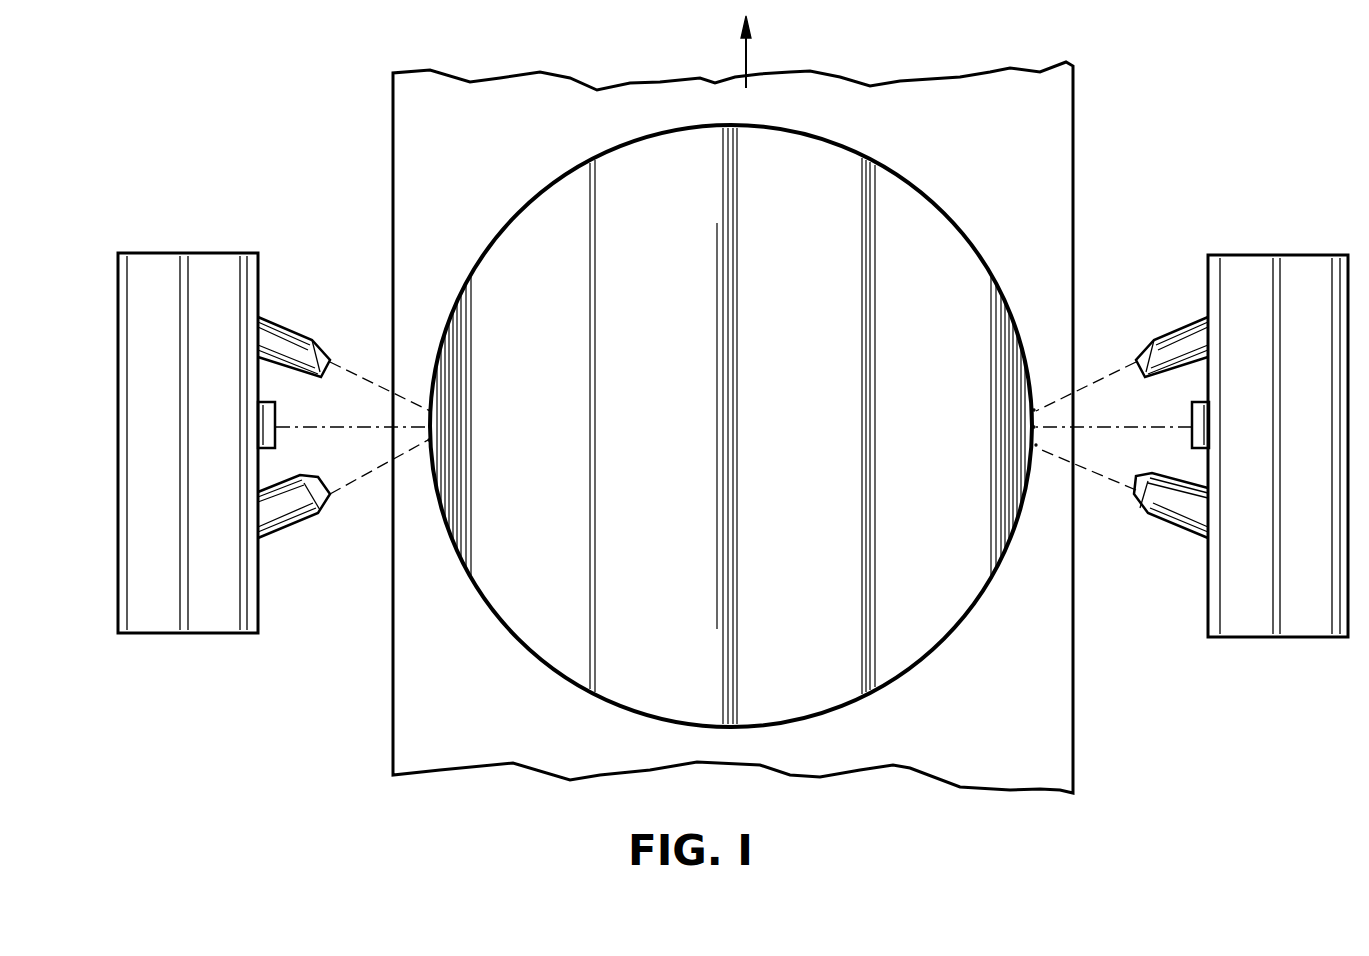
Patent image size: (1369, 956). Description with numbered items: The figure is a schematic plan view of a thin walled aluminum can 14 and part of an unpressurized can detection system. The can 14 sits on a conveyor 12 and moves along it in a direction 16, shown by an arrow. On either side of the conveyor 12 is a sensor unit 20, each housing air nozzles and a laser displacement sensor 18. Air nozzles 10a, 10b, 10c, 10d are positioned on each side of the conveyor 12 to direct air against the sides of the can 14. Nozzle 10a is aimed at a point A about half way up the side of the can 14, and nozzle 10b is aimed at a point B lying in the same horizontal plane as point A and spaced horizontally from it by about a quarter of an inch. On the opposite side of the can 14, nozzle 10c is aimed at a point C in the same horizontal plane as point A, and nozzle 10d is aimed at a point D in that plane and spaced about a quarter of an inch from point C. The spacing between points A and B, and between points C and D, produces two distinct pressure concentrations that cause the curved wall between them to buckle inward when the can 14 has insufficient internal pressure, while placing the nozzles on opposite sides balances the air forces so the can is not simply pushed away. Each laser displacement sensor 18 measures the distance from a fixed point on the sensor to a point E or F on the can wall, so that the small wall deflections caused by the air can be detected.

The air nozzle 10a is at (1148, 520).
The air nozzle 10b is at (1178, 332).
The air nozzle 10c is at (311, 521).
The air nozzle 10d is at (311, 337).
The conveyor 12 is at (1055, 143).
The thin walled aluminum can 14 is at (893, 190).
The direction 16 is at (748, 57).
The laser displacement sensor 18 is at (276, 412).
The sensor unit 20 is at (167, 262).
The point A is at (1038, 465).
The point B is at (1047, 383).
The point C is at (430, 445).
The point D is at (430, 408).
The point E is at (1040, 425).
The point F is at (430, 428).